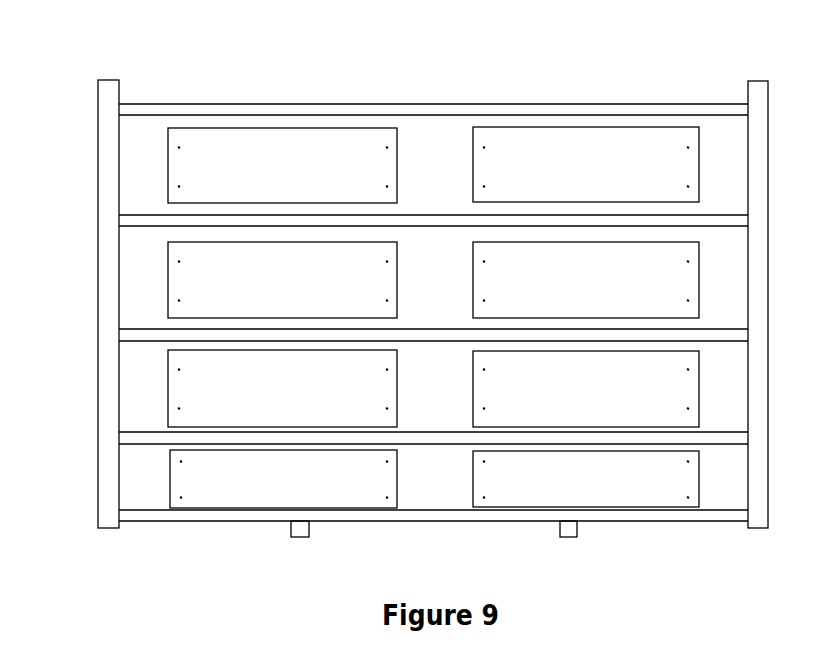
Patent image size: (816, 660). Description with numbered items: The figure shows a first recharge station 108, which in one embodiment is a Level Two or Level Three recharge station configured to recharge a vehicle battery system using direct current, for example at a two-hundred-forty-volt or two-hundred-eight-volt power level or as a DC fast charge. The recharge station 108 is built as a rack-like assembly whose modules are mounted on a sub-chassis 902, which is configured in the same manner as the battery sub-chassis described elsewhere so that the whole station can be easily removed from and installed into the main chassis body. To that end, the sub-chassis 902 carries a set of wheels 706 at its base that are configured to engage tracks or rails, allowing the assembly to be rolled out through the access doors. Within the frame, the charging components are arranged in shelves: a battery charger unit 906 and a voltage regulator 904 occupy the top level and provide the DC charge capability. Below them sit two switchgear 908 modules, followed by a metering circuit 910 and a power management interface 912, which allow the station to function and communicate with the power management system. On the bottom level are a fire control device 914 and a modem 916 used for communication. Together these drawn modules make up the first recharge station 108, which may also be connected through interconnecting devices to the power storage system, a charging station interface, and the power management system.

The first recharge station 108 is at (393, 289).
The sub-chassis 902 is at (108, 235).
The wheels 706 is at (296, 533).
The voltage regulator 904 is at (586, 164).
The battery charger unit 906 is at (282, 165).
The switchgear 908 is at (433, 280).
The metering circuit 910 is at (282, 388).
The power management interface 912 is at (586, 389).
The fire control device 914 is at (283, 479).
The modem 916 is at (586, 479).